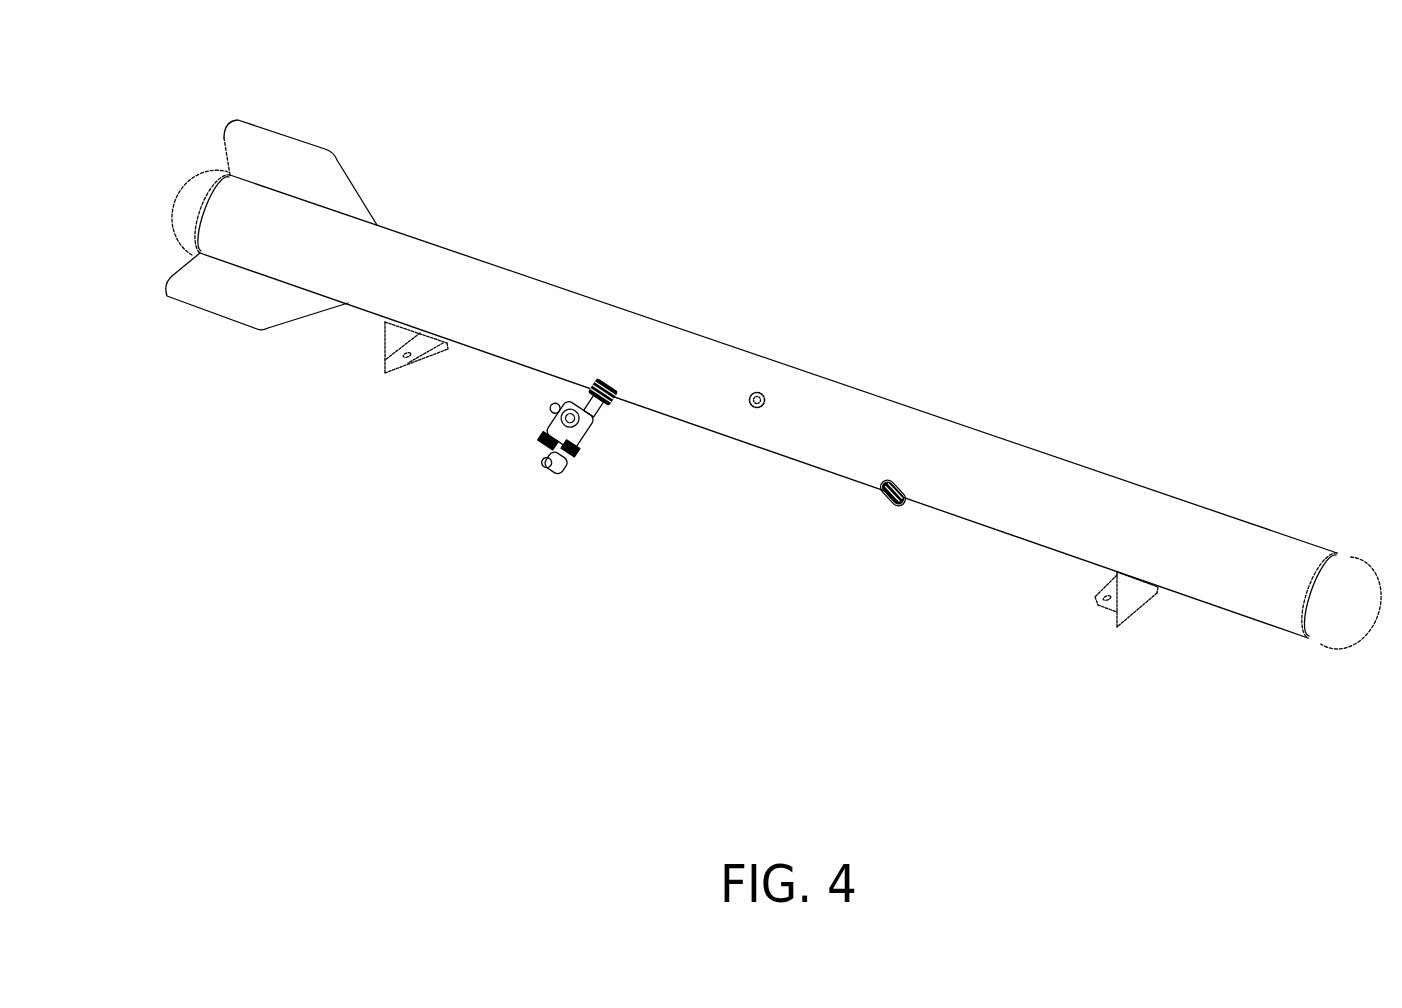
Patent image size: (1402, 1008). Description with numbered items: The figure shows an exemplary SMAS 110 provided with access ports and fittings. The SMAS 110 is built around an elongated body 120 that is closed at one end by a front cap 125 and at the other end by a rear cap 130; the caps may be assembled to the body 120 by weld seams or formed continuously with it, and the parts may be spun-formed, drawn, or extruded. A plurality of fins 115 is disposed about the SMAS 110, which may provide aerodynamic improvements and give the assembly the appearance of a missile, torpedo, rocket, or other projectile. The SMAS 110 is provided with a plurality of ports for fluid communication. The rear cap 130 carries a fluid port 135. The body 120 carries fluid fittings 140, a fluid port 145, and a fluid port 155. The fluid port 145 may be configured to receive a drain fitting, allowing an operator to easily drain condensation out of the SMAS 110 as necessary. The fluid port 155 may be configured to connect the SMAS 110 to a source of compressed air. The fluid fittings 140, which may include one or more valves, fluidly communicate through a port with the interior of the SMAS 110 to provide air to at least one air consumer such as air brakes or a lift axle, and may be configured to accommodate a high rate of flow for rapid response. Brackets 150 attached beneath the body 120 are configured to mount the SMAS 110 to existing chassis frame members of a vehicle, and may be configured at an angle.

The SMAS 110 is at (1133, 63).
The fins 115 is at (231, 130).
The body 120 is at (942, 420).
The front cap 125 is at (1368, 568).
The rear cap 130 is at (167, 230).
The fluid port 135 is at (170, 206).
The fluid fittings 140 is at (550, 476).
The fluid port 145 is at (757, 392).
The brackets 150 is at (1095, 602).
The fluid port 155 is at (884, 500).